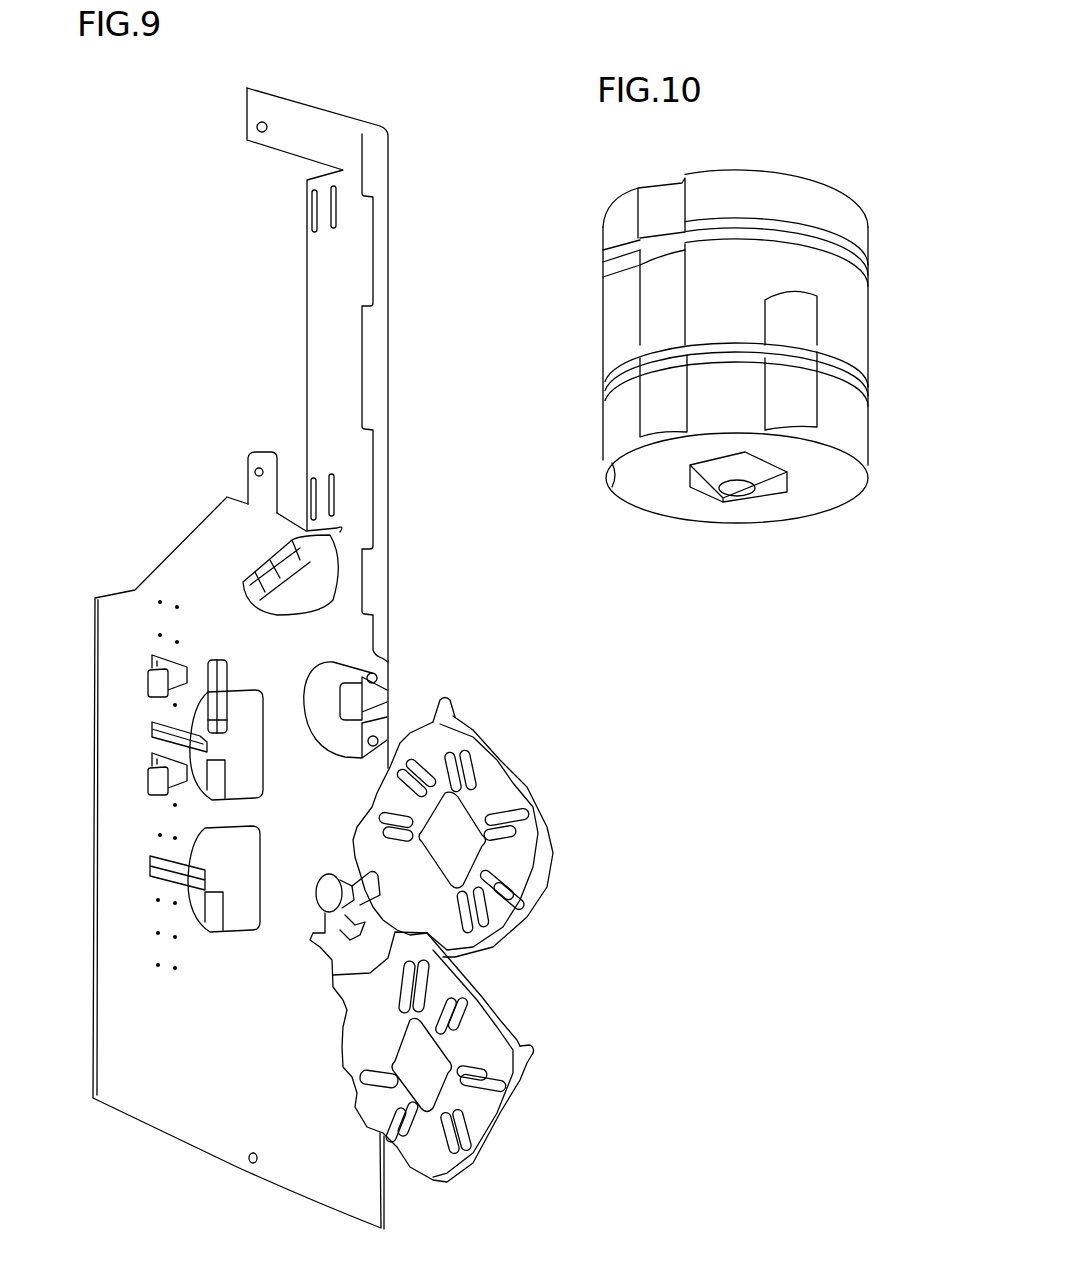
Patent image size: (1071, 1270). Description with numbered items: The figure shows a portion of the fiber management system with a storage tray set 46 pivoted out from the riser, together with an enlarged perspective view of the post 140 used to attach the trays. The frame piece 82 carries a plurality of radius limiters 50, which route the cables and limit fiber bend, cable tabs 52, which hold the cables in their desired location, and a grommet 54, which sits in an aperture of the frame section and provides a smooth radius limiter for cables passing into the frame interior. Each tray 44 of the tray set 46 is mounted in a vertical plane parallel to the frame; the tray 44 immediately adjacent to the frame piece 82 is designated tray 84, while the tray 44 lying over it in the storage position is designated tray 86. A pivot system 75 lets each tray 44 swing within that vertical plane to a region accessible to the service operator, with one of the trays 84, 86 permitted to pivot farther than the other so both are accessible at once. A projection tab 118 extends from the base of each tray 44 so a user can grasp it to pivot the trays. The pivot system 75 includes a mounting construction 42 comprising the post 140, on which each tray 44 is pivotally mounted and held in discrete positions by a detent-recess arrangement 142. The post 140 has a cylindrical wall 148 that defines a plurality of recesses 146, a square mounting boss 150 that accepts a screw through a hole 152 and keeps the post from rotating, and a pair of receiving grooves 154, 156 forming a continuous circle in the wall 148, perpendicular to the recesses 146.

In FIG. 9, the mounting construction 42 is at (307, 862).
In FIG. 9, the tray 44 is at (500, 768).
In FIG. 9, the tray set 46 is at (560, 965).
In FIG. 9, the radius limiter 50 is at (300, 613).
In FIG. 9, the cable tab 52 is at (213, 658).
In FIG. 9, the grommet 54 is at (340, 732).
In FIG. 9, the pivot system 75 is at (297, 922).
In FIG. 9, the frame piece 82 is at (93, 1020).
In FIG. 9, the tray 84 is at (482, 997).
In FIG. 9, the tray 86 is at (522, 787).
In FIG. 9, the projection tab 118 is at (443, 697).
In FIG. 9, the post 140 is at (328, 874).
In FIG. 10, the post 140 is at (830, 149).
In FIG. 9, the detent-recess arrangement 142 is at (306, 878).
In FIG. 10, the detent-recess arrangement 142 is at (703, 297).
In FIG. 10, the recess 146 is at (685, 187).
In FIG. 10, the cylindrical wall 148 is at (733, 180).
In FIG. 10, the square mounting boss 150 is at (760, 500).
In FIG. 10, the hole 152 is at (727, 493).
In FIG. 10, the receiving groove 154 is at (702, 358).
In FIG. 10, the receiving groove 156 is at (788, 230).